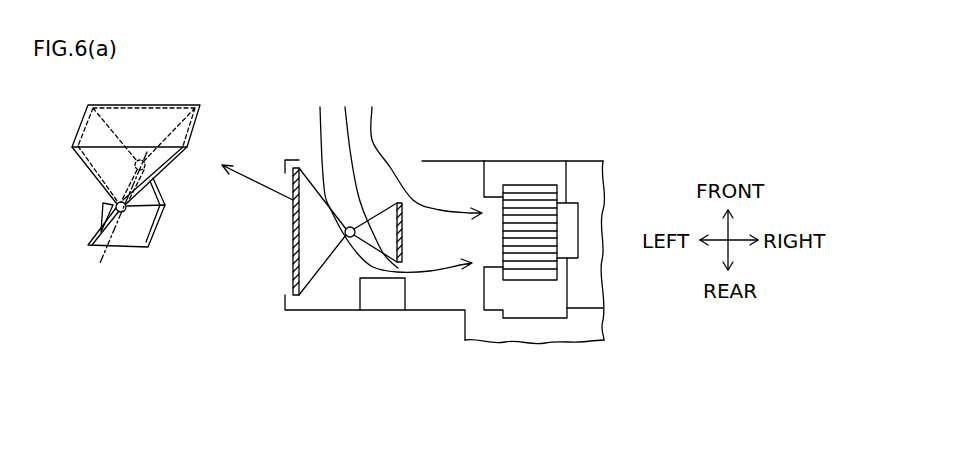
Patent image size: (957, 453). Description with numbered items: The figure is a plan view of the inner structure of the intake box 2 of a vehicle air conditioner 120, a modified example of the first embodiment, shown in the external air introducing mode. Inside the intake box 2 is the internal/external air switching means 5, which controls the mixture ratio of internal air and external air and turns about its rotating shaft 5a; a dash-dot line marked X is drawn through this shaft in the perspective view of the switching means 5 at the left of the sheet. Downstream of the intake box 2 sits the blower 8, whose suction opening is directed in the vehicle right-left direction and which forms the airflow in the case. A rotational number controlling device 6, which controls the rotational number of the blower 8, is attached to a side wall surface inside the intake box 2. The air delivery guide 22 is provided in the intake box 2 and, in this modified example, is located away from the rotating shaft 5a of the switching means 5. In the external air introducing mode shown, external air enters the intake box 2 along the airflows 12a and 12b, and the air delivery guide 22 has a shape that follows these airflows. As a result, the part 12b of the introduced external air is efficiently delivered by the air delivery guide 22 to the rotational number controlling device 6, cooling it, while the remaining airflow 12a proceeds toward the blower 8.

The vehicle air conditioner 120 is at (644, 119).
The intake box 2 is at (470, 161).
The blower 8 is at (525, 185).
The rotational number controlling device 6 is at (358, 290).
The airflow 12a is at (374, 117).
The airflow (part of the external air) 12b is at (353, 97).
The internal/external air switching means 5 is at (292, 218).
The rotating shaft 5a is at (108, 205).
The air delivery guide 22 is at (403, 233).
The rotation axis X is at (117, 219).